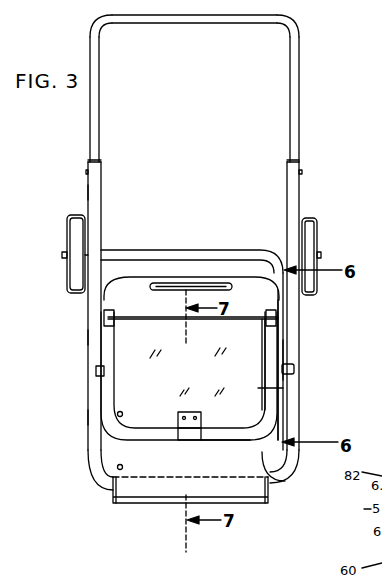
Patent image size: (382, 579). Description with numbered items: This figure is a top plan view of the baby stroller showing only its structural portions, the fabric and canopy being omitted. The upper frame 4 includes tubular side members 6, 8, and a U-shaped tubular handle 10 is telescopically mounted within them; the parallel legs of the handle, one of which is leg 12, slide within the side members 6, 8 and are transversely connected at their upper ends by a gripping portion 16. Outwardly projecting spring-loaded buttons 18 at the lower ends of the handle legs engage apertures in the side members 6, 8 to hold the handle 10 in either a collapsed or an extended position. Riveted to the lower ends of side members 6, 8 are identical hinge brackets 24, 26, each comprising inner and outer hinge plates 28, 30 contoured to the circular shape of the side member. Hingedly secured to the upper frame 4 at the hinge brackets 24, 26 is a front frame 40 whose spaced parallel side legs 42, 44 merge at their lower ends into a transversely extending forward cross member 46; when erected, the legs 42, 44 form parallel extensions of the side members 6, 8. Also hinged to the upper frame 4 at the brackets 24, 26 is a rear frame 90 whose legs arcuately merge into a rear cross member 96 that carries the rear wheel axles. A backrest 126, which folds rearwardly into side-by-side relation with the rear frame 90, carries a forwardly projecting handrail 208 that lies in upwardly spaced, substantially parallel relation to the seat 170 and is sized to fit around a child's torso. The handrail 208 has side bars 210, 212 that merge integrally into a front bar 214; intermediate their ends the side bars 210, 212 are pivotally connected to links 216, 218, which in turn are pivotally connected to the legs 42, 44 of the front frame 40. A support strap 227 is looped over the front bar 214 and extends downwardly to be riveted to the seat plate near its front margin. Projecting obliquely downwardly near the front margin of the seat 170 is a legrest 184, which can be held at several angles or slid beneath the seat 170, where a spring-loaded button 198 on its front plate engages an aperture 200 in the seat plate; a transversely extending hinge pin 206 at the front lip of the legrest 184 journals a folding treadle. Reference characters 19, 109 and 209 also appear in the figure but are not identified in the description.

The U-shaped tubular handle 10 is at (208, 82).
The handle leg 12 is at (300, 87).
The gripping portion 16 is at (168, 25).
The left handle side 19 is at (100, 94).
The upper frame 4 is at (101, 203).
The tubular side member 6 is at (300, 192).
The tubular side member 8 is at (88, 192).
The spring-loaded buttons 18 is at (87, 172).
The right wheel 109 is at (318, 230).
The hinge bracket 26 is at (88, 336).
The side leg 44 is at (88, 418).
The front frame 40 is at (91, 478).
The side leg 42 is at (300, 407).
The rear frame 90 is at (194, 250).
The rear cross member 96 is at (233, 258).
The backrest 126 is at (144, 285).
The inner hinge plate 28 is at (276, 329).
The hinge bracket 24 is at (300, 334).
The outer hinge plate 30 is at (300, 360).
The link 216 is at (294, 371).
The seat 170 is at (283, 388).
The link 218 is at (96, 372).
The side bar 212 is at (114, 393).
The side bar 210 is at (266, 368).
The handrail 208 is at (213, 423).
The aperture 200 is at (122, 412).
The support strap 227 is at (193, 441).
The front bar 214 is at (230, 442).
The hinge pin 206 is at (152, 484).
The spring-loaded button 198 is at (123, 467).
The tray left end 209 is at (116, 505).
The forward cross member 46 is at (270, 497).
The legrest 184 is at (281, 481).